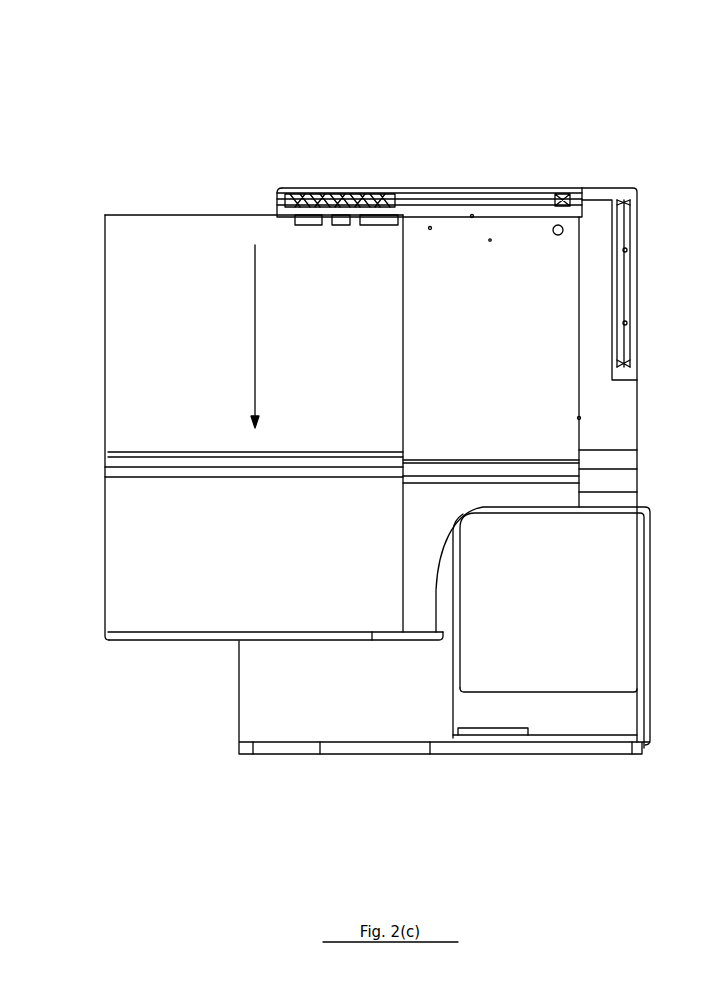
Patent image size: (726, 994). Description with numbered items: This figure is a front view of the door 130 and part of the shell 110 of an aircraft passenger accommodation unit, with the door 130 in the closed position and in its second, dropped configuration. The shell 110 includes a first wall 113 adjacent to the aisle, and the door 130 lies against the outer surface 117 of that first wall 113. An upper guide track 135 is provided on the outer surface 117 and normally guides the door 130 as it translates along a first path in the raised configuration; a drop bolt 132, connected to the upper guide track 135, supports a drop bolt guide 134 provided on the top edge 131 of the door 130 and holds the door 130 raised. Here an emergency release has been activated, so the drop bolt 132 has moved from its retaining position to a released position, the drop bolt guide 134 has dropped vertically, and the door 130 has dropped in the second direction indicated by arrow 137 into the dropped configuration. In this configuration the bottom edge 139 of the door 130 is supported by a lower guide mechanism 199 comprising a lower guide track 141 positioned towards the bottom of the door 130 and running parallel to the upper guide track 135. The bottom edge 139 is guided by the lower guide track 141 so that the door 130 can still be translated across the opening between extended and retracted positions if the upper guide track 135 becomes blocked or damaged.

The shell 110 is at (629, 168).
The first wall 113 is at (525, 223).
The outer surface 117 is at (485, 353).
The door 130 is at (140, 320).
The top edge 131 is at (133, 215).
The drop bolt 132 is at (352, 202).
The drop bolt guide 134 is at (320, 203).
The upper guide track 135 is at (452, 202).
The arrow 137 is at (253, 325).
The bottom edge 139 is at (195, 640).
The lower guide track 141 is at (400, 638).
The lower guide mechanism 199 is at (420, 645).